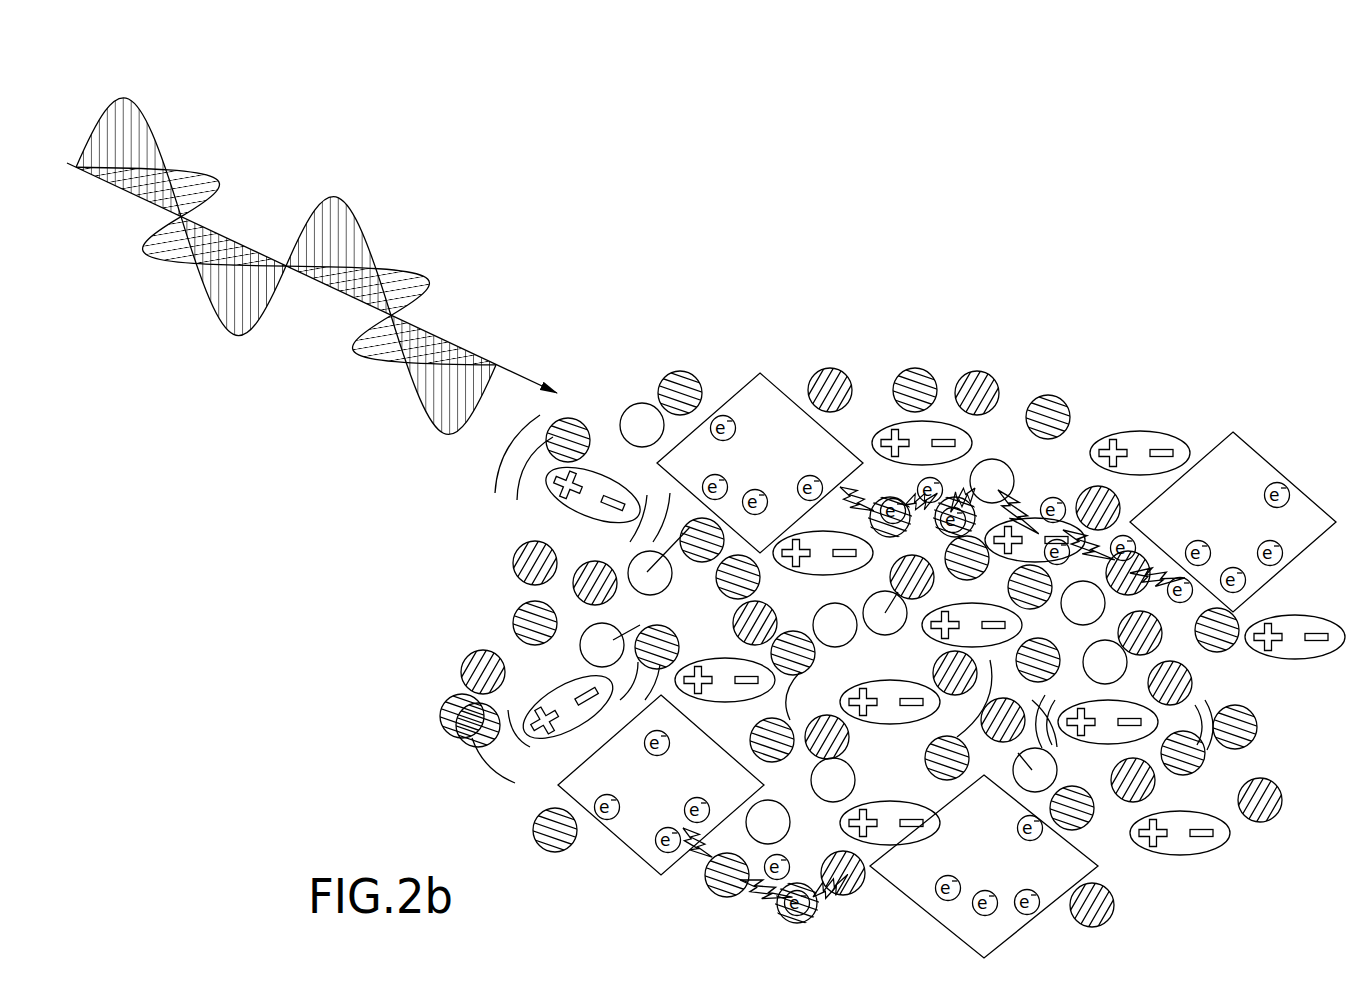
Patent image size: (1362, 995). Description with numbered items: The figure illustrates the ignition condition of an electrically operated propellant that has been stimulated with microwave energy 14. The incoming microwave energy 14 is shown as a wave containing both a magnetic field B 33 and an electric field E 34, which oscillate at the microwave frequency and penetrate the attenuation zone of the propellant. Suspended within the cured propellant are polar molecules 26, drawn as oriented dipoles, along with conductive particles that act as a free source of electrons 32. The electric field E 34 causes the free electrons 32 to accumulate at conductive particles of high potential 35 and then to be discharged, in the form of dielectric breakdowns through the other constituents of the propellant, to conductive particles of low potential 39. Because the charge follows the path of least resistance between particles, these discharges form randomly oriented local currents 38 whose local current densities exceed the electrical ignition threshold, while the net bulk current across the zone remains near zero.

The microwave energy 14 is at (276, 436).
The magnetic field B 33 is at (92, 98).
The electric field E 34 is at (434, 263).
The polar molecules 26 is at (540, 685).
The high potential 35 is at (760, 372).
The low potential 39 is at (1250, 466).
The local currents 38 is at (1036, 494).
The free electrons 32 is at (775, 913).